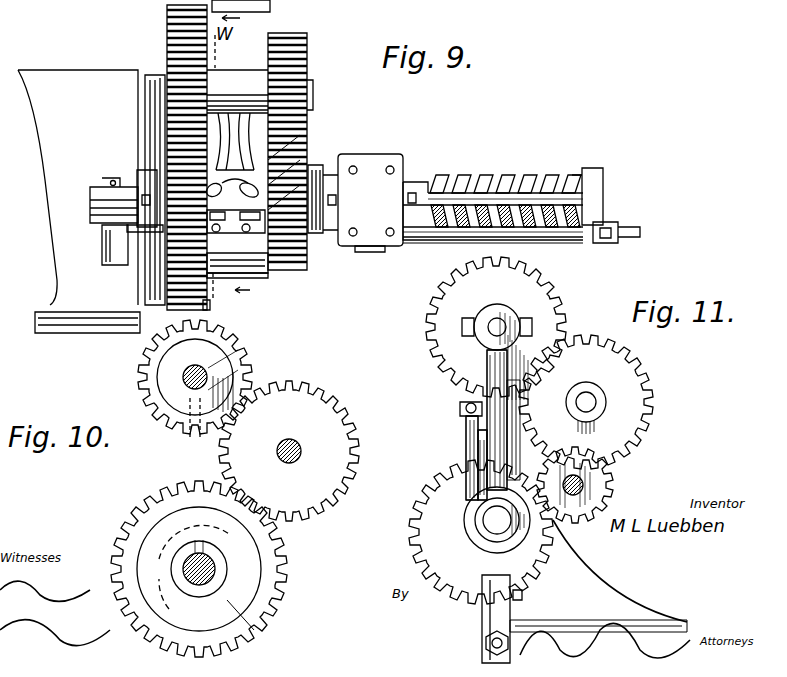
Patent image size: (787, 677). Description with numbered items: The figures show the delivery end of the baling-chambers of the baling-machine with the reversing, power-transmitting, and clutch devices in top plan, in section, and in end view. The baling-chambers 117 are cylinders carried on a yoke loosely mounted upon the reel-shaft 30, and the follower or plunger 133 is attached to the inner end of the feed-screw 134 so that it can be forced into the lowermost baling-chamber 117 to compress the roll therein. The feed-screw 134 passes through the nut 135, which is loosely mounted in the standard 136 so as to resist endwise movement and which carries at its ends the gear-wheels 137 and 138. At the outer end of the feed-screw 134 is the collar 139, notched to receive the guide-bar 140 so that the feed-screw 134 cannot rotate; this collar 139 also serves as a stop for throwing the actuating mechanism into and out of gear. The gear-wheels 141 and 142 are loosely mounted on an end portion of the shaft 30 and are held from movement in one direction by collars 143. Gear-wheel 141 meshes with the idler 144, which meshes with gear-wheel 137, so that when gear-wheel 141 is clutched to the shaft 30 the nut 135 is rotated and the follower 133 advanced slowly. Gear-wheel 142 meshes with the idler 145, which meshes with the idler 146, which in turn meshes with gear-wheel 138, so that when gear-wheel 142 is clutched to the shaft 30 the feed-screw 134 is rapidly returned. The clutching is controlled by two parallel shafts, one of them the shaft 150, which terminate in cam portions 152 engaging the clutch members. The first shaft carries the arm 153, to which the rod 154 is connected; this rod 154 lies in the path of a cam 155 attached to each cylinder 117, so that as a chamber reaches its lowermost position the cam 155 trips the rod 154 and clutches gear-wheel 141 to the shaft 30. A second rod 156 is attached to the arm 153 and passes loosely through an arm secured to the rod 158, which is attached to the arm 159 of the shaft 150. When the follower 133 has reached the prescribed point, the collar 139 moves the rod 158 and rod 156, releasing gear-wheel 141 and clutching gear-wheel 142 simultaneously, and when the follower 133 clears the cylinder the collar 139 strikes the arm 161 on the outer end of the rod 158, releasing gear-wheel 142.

In FIG. 9, the reel-shaft 30 is at (100, 192).
In FIG. 10, the reel-shaft 30 is at (240, 367).
In FIG. 11, the reel-shaft 30 is at (528, 322).
In FIG. 9, the baling-chamber 117 is at (78, 187).
In FIG. 9, the follower or plunger 133 is at (118, 333).
In FIG. 9, the feed-screw 134 is at (493, 195).
In FIG. 10, the feed-screw 134 is at (217, 568).
In FIG. 11, the feed-screw 134 is at (510, 520).
In FIG. 10, the nut 135 is at (262, 632).
In FIG. 9, the standard 136 is at (258, 270).
In FIG. 11, the standard 136 is at (598, 576).
In FIG. 9, the gear-wheel 137 is at (209, 308).
In FIG. 10, the gear-wheel 137 is at (124, 533).
In FIG. 11, the gear-wheel 137 is at (445, 477).
In FIG. 11, the gear-wheel 138 is at (478, 520).
In FIG. 9, the collar 139 is at (607, 177).
In FIG. 11, the collar 139 is at (525, 545).
In FIG. 9, the guide-bar 140 is at (603, 196).
In FIG. 11, the guide-bar 140 is at (455, 497).
In FIG. 9, the gear-wheel 141 is at (165, 22).
In FIG. 10, the gear-wheel 141 is at (168, 366).
In FIG. 9, the gear-wheel 142 is at (318, 26).
In FIG. 11, the gear-wheel 142 is at (546, 297).
In FIG. 9, the collar 143 is at (138, 212).
In FIG. 10, the idler 144 is at (312, 403).
In FIG. 11, the idler 144 is at (660, 397).
In FIG. 11, the idler 145 is at (612, 373).
In FIG. 11, the idler 146 is at (618, 482).
In FIG. 10, the shaft 150 is at (197, 442).
In FIG. 9, the cam portion 152 is at (268, 180).
In FIG. 10, the cam portion 152 is at (243, 383).
In FIG. 9, the arm 153 is at (300, 178).
In FIG. 9, the rod 154 is at (118, 262).
In FIG. 9, the cam 155 is at (125, 240).
In FIG. 9, the rod 156 is at (236, 193).
In FIG. 9, the rod 158 is at (455, 240).
In FIG. 11, the rod 158 is at (466, 412).
In FIG. 11, the arm 159 is at (462, 408).
In FIG. 11, the arm 161 is at (470, 432).